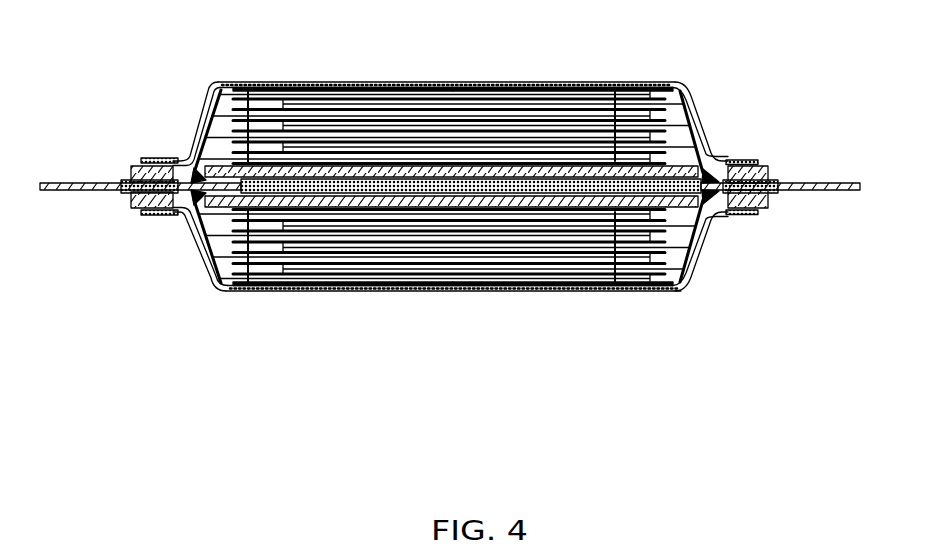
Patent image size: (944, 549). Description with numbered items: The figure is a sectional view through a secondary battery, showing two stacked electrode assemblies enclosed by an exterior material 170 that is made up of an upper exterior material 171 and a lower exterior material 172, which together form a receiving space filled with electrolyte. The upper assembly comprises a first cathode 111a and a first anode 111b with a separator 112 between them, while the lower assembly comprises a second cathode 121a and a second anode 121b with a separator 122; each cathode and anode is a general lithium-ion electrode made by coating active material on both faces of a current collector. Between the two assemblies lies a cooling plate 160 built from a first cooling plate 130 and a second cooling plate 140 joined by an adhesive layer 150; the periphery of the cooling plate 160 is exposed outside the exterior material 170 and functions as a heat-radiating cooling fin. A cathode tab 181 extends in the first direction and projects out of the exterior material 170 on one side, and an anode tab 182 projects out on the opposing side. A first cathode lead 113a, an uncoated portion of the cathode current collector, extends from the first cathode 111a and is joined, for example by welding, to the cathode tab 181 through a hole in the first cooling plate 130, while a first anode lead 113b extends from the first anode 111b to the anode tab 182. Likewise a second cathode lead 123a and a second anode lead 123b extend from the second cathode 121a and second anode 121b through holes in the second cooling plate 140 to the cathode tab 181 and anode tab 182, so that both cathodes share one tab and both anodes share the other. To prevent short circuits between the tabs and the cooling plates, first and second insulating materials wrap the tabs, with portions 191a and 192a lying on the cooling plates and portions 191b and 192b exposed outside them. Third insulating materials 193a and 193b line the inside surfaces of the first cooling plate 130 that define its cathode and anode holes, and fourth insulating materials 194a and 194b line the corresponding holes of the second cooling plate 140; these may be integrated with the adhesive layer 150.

The exterior material 170 is at (200, 293).
The upper exterior material 171 is at (440, 74).
The lower exterior material 172 is at (548, 283).
The separator 112 is at (645, 74).
The separator 122 is at (645, 283).
The first cathode 111a is at (605, 92).
The first anode 111b is at (255, 80).
The second cathode 121a is at (597, 280).
The second anode 121b is at (253, 283).
The first cathode lead 113a is at (674, 93).
The first anode lead 113b is at (203, 100).
The second cathode lead 123a is at (700, 255).
The second anode lead 123b is at (200, 258).
The first cooling plate 130 is at (507, 169).
The second cooling plate 140 is at (424, 199).
The adhesive layer 150 is at (361, 183).
The cooling plate 160 is at (453, 293).
The cathode tab 181 is at (817, 175).
The anode tab 182 is at (60, 174).
The portion of first insulating material 191a is at (760, 158).
The portion of first insulating material 191b is at (770, 184).
The portion of second insulating material 192a is at (123, 158).
The portion of second insulating material 192b is at (113, 185).
The third insulating material 193a is at (721, 152).
The third insulating material 193b is at (167, 150).
The fourth insulating material 194a is at (730, 207).
The fourth insulating material 194b is at (133, 206).